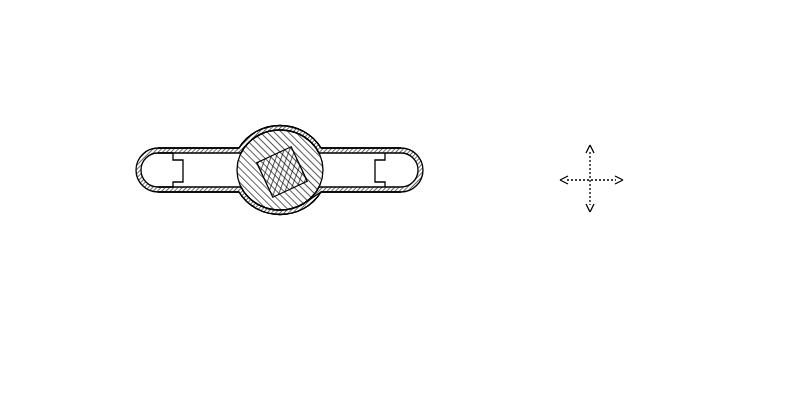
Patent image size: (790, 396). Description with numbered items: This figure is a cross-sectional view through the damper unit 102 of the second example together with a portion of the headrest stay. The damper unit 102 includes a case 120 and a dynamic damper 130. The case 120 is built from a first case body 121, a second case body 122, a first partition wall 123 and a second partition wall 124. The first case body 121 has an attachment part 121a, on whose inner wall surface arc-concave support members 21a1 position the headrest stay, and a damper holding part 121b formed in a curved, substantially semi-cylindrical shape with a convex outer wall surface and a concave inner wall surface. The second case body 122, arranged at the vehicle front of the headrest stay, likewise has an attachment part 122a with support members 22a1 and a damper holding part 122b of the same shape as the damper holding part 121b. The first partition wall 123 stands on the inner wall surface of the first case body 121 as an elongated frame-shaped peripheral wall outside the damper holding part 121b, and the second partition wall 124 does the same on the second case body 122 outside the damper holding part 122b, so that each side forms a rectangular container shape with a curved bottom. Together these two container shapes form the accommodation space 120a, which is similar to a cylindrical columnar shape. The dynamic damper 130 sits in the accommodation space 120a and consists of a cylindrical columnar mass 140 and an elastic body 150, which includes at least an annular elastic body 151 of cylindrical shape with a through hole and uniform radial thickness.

The damper unit 102 is at (375, 200).
The case 120 is at (387, 149).
The accommodation space 120a is at (317, 206).
The first case body 121 is at (352, 149).
The attachment part 121a is at (147, 150).
The damper holding part 121b is at (250, 128).
The second case body 122 is at (350, 192).
The attachment part 122a is at (142, 186).
The damper holding part 122b is at (255, 213).
The first partition wall 123 is at (217, 150).
The second partition wall 124 is at (213, 190).
The dynamic damper 130 is at (287, 139).
The mass 140 is at (295, 128).
The elastic body 150 is at (272, 150).
The annular elastic body 151 is at (283, 212).
The support member 21a1 is at (170, 150).
The support member 22a1 is at (313, 144).